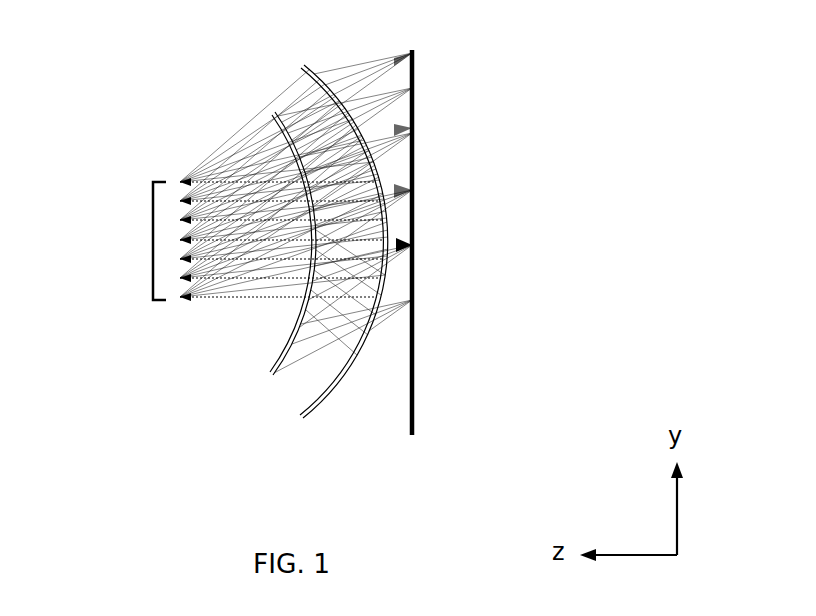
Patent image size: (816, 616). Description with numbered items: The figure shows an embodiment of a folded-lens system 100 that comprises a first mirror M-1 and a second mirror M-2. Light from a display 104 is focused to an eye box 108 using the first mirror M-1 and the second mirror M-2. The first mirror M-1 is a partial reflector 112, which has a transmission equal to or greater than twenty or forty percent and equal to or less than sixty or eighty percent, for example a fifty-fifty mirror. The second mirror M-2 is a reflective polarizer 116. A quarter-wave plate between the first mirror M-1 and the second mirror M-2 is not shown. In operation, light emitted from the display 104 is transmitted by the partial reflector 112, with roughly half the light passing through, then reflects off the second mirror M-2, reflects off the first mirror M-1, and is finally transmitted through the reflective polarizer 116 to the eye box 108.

The folded-lens system 100 is at (603, 60).
The display 104 is at (414, 331).
The eye box 108 is at (153, 237).
The partial reflector 112 is at (335, 390).
The reflective polarizer 116 is at (303, 309).
The first mirror M-1 is at (375, 310).
The second mirror M-2 is at (280, 362).